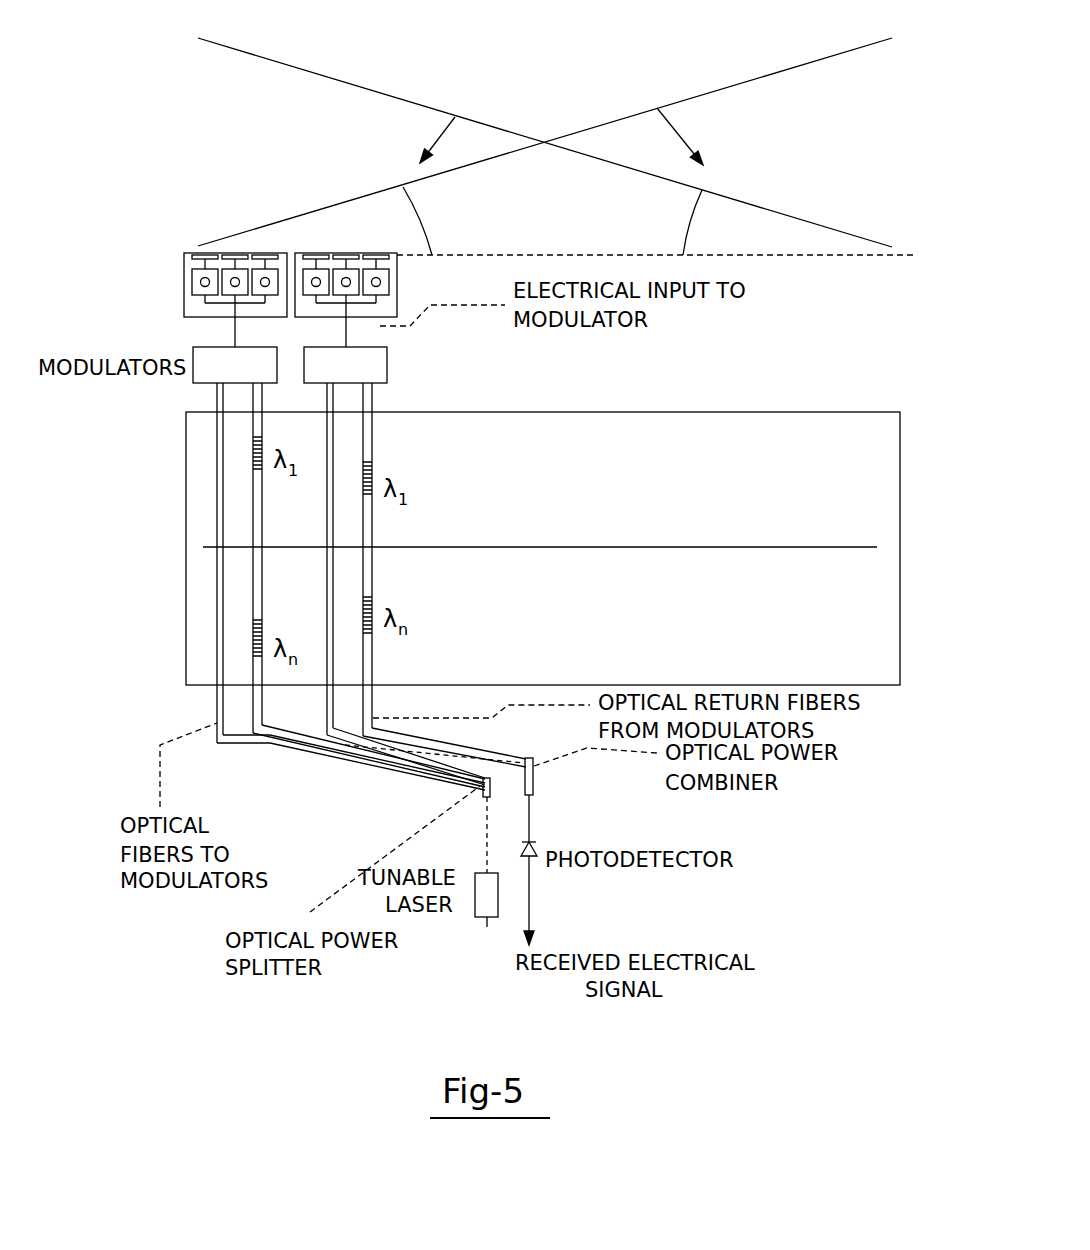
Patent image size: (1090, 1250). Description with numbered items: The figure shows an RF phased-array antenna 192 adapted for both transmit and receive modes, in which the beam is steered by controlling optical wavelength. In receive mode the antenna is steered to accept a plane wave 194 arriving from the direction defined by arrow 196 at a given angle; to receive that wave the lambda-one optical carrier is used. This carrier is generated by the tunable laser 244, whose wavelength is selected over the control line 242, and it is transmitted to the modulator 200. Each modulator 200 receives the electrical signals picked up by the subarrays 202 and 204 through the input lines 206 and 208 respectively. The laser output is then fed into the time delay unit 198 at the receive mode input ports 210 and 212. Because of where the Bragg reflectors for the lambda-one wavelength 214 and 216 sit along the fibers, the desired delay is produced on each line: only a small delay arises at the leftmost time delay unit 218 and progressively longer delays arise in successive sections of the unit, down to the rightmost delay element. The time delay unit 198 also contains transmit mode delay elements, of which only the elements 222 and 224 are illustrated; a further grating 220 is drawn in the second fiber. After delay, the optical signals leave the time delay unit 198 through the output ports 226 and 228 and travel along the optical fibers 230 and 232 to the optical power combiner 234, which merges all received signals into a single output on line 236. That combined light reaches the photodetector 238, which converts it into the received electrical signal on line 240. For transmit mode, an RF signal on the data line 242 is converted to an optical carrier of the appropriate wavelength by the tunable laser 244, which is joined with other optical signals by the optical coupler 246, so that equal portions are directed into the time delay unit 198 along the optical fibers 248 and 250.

The RF phased-array antenna 192 is at (480, 166).
The plane wave 194 is at (850, 50).
The arrow 196 is at (683, 137).
The time delay unit 198 is at (186, 450).
The modulator 200 is at (197, 386).
The subarray 202 is at (265, 246).
The subarray 204 is at (340, 246).
The input line 206 is at (235, 326).
The input line 208 is at (346, 337).
The receive mode input port 210 is at (289, 558).
The receive mode input port 212 is at (419, 559).
The Bragg reflector for λ1 214 is at (259, 470).
The Bragg reflector for λ1 216 is at (372, 500).
The time delay unit 218 is at (262, 553).
The second fiber grating (lambda n) 220 is at (372, 562).
The transmit mode delay element 222 is at (217, 513).
The transmit mode delay element 224 is at (327, 632).
The output port 226 is at (250, 690).
The output port 228 is at (373, 690).
The optical fiber 230 is at (278, 750).
The optical fiber 232 is at (468, 748).
The optical power combiner 234 is at (534, 780).
The line 236 is at (531, 805).
The photodetector 238 is at (531, 835).
The line 240 is at (529, 888).
The control line 242 is at (487, 927).
The tunable laser 244 is at (477, 917).
The optical coupler 246 is at (487, 798).
The optical fiber 248 is at (313, 755).
The optical fiber 250 is at (357, 752).